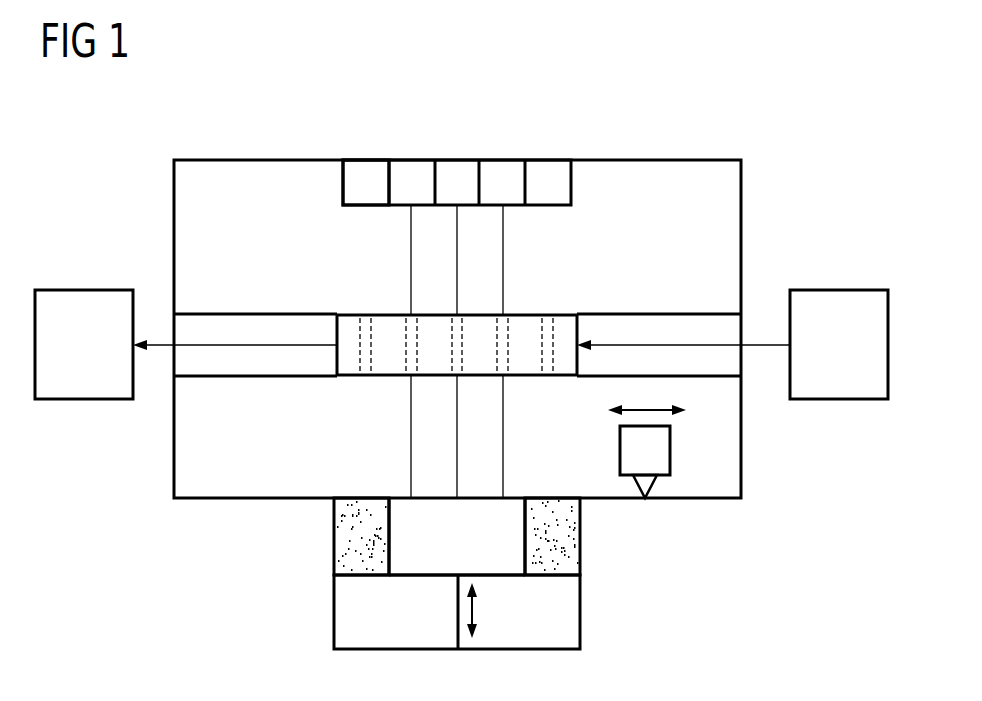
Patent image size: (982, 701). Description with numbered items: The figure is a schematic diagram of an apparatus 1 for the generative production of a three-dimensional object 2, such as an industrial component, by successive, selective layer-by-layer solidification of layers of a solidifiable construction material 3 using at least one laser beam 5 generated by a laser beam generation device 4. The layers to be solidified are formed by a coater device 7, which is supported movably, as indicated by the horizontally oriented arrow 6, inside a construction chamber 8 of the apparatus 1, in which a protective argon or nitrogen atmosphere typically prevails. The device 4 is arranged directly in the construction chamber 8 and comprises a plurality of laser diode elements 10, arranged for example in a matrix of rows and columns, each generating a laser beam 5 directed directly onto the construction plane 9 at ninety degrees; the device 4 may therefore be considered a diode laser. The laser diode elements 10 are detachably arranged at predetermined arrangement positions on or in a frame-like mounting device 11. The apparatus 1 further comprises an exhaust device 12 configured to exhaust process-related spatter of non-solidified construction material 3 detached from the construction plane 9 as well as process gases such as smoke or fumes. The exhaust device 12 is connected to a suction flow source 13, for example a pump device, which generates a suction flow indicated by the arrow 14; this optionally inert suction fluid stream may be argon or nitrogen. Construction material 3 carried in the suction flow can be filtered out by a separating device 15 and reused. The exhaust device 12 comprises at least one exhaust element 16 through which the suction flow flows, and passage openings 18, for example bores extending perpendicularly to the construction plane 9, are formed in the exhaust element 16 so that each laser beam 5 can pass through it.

The apparatus 1 is at (705, 113).
The three-dimensional object 2 is at (405, 543).
The construction material 3 is at (579, 533).
The laser beam generation device 4 is at (512, 155).
The laser beam 5 is at (411, 247).
The arrow 6 is at (650, 410).
The coater device 7 is at (672, 447).
The construction chamber 8 is at (742, 184).
The construction plane 9 is at (392, 488).
The laser diode element 10 is at (362, 160).
The mounting device 11 is at (344, 172).
The exhaust device 12 is at (571, 298).
The suction flow source 13 is at (842, 290).
The arrow 14 is at (203, 345).
The separating device 15 is at (85, 290).
The exhaust element 16 is at (347, 377).
The passage opening 18 is at (364, 320).